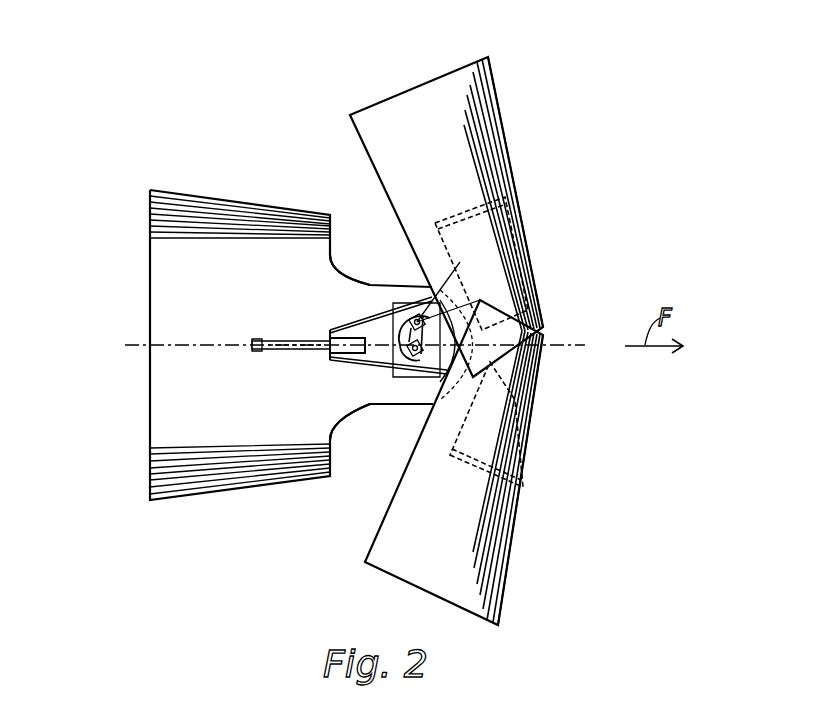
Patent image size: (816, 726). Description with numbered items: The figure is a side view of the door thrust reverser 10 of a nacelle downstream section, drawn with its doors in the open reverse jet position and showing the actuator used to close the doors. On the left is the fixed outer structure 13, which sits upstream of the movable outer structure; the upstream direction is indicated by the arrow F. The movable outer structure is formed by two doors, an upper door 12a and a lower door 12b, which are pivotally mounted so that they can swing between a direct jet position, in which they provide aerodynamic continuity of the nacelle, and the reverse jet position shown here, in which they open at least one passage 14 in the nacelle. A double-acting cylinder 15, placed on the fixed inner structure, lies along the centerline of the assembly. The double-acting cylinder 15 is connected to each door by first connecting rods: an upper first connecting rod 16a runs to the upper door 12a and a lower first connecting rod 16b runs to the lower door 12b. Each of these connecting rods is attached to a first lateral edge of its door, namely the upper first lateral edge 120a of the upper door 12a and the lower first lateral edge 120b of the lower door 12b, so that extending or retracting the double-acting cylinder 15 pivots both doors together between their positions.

The thrust reverser 10 is at (210, 99).
The fixed outer structure 13 is at (185, 252).
The passage 14 is at (373, 250).
The double-acting cylinder 15 is at (275, 338).
The upper first connecting rod 16a is at (365, 345).
The lower first connecting rod 16b is at (365, 350).
The upper door 12a is at (530, 215).
The lower door 12b is at (532, 505).
The upper first lateral edge 120a is at (355, 128).
The lower first lateral edge 120b is at (358, 550).